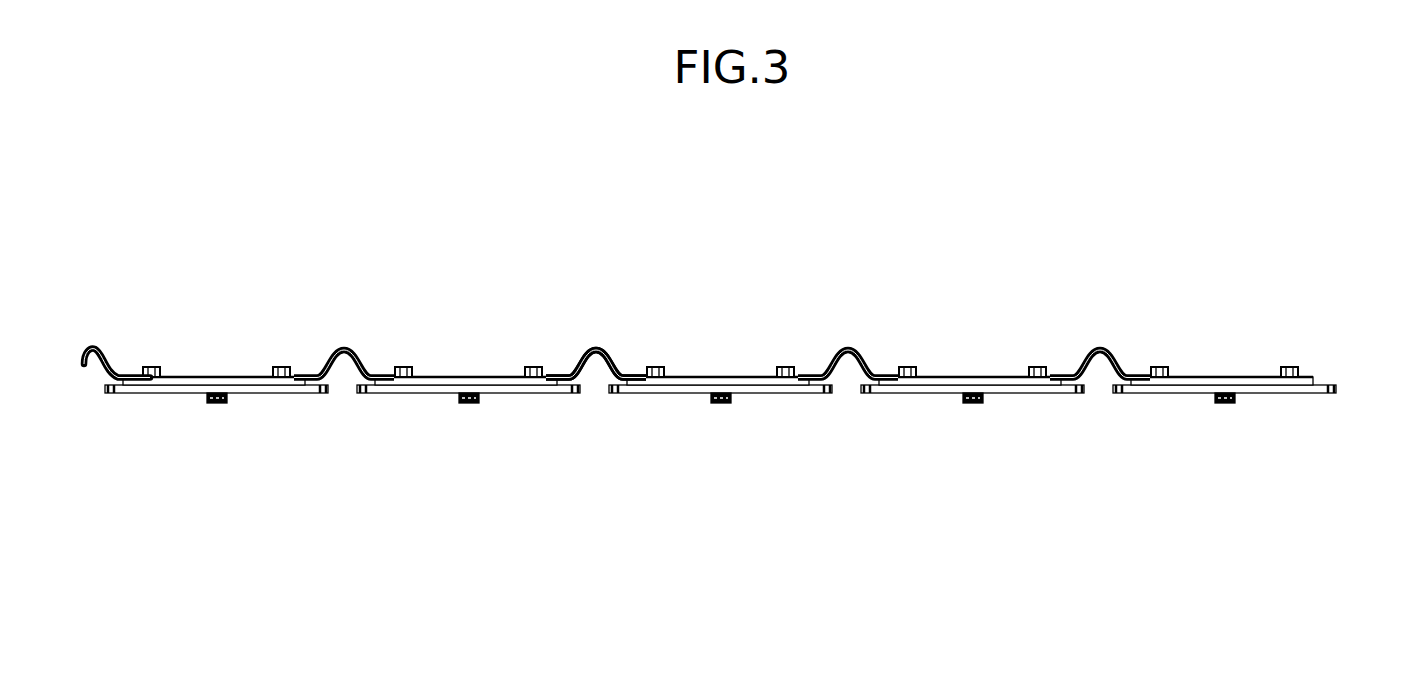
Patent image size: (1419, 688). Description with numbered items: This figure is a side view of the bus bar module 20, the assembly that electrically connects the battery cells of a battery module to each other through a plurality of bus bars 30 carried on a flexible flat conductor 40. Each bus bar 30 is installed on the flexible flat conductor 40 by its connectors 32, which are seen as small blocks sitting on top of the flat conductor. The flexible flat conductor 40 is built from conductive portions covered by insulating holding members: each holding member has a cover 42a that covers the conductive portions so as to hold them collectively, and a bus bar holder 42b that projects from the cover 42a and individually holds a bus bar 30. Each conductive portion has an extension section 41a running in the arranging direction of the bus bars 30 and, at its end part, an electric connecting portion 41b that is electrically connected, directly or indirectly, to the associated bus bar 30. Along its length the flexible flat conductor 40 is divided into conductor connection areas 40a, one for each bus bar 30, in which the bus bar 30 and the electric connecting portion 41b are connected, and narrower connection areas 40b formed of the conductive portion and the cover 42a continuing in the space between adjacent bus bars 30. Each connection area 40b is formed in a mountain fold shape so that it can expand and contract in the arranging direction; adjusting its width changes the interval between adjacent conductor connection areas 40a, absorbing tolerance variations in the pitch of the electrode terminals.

The bus bar module 20 is at (641, 172).
The bus bar 30 is at (160, 394).
The connector 32 is at (150, 367).
The flexible flat conductor 40 is at (1334, 358).
The conductor connection area 40a is at (318, 547).
The connection area 40b is at (320, 547).
The extension section 41a is at (1100, 345).
The electric connecting portion 41b is at (213, 403).
The cover 42a is at (572, 368).
The bus bar holder 42b is at (1211, 377).